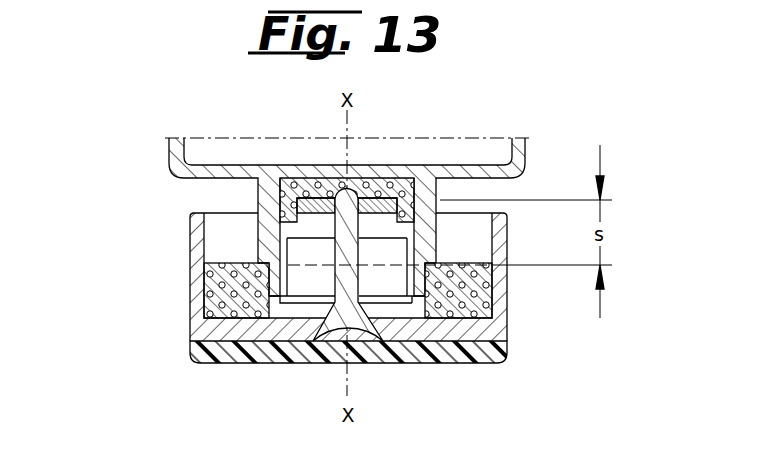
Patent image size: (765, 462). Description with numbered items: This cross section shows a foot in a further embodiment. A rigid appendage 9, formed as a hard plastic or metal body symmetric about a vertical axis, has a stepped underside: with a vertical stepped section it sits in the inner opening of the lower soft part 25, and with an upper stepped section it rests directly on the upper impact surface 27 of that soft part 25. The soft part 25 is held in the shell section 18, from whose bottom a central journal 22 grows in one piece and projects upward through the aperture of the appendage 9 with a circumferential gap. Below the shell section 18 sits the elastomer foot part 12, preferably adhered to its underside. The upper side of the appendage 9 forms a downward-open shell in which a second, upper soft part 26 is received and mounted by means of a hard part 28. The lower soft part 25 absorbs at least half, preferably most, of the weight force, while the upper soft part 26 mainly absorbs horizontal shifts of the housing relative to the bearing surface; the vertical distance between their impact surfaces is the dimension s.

The appendage 9 is at (268, 236).
The foot part 12 is at (283, 352).
The shell section 18 is at (187, 260).
The journal 22 is at (353, 273).
The soft part 25 is at (467, 301).
The second soft part 26 is at (402, 182).
The upper impact surface 27 is at (233, 265).
The hard part 28 is at (320, 202).